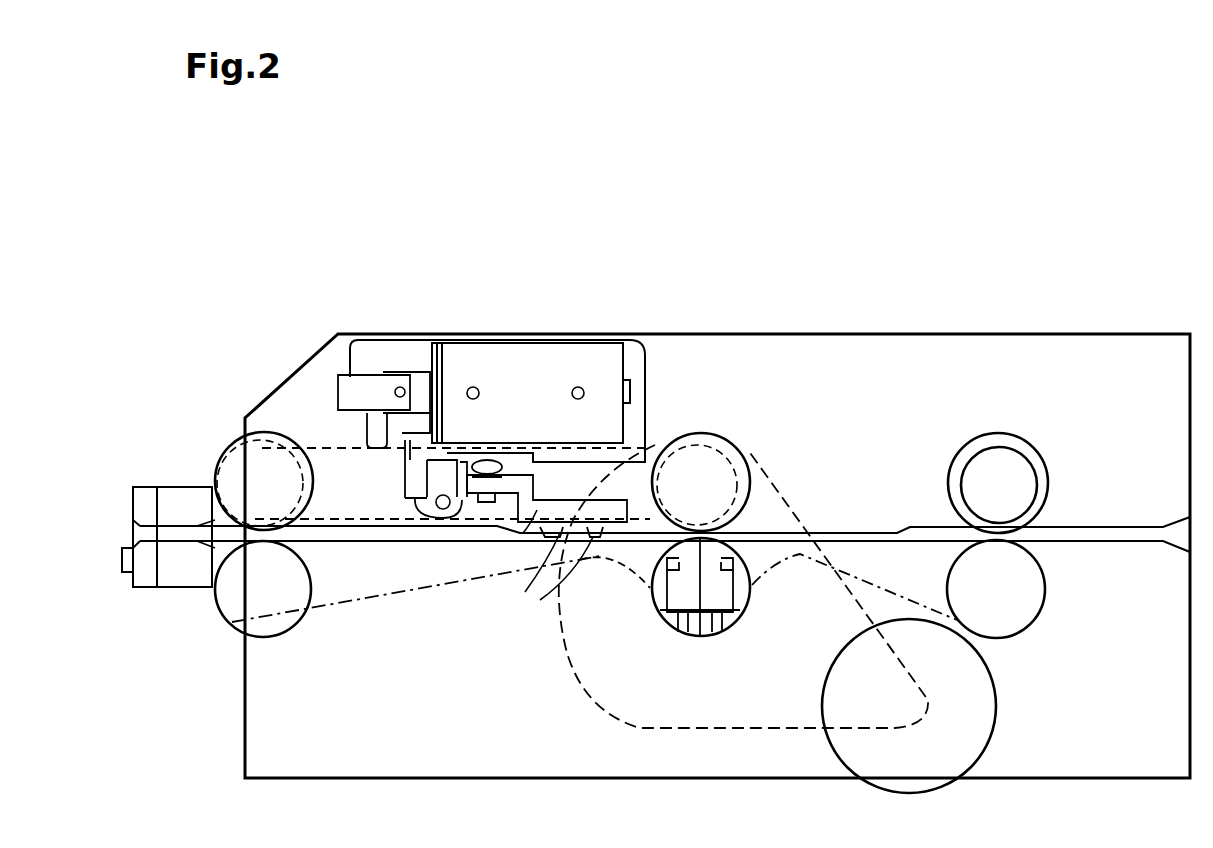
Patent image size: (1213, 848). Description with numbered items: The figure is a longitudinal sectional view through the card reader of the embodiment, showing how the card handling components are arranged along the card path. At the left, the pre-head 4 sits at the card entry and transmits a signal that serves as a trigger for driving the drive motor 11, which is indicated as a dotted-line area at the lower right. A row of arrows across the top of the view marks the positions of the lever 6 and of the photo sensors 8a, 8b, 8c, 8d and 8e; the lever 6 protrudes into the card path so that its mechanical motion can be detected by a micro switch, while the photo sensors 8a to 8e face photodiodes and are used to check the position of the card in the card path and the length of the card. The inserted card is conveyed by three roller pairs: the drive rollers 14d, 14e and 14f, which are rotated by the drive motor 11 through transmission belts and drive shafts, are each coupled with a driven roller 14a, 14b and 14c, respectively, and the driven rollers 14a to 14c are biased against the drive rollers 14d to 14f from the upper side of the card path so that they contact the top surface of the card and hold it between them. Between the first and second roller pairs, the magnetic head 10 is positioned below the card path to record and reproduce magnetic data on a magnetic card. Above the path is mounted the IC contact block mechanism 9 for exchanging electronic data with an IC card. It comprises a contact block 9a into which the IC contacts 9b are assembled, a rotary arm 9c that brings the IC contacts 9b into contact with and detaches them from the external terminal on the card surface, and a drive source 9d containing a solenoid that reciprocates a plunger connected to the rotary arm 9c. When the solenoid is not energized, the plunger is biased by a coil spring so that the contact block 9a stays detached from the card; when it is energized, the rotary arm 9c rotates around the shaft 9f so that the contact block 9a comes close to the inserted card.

The pre-head 4 is at (175, 575).
The lever 6 is at (165, 245).
The photo sensor 8a is at (262, 245).
The photo sensor 8b is at (347, 245).
The photo sensor 8c is at (655, 248).
The photo sensor 8d is at (705, 248).
The photo sensor 8e is at (1018, 248).
The IC contact block mechanism 9 is at (490, 448).
The contact block 9a is at (548, 530).
The IC contacts 9b is at (600, 535).
The rotary arm 9c is at (404, 487).
The drive source 9d is at (522, 360).
The shaft 9f is at (438, 508).
The magnetic head 10 is at (713, 587).
The drive motor 11 is at (975, 733).
The driven roller 14a is at (302, 420).
The driven roller 14b is at (738, 448).
The driven roller 14c is at (1018, 470).
The drive roller 14d is at (277, 600).
The drive roller 14e is at (725, 638).
The drive roller 14f is at (1038, 618).